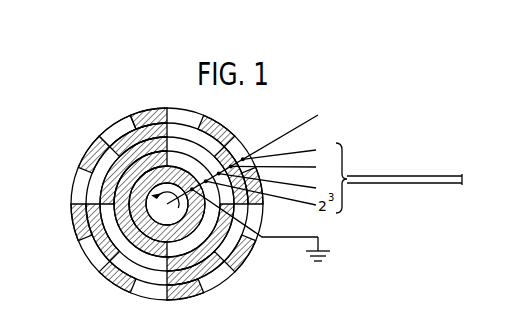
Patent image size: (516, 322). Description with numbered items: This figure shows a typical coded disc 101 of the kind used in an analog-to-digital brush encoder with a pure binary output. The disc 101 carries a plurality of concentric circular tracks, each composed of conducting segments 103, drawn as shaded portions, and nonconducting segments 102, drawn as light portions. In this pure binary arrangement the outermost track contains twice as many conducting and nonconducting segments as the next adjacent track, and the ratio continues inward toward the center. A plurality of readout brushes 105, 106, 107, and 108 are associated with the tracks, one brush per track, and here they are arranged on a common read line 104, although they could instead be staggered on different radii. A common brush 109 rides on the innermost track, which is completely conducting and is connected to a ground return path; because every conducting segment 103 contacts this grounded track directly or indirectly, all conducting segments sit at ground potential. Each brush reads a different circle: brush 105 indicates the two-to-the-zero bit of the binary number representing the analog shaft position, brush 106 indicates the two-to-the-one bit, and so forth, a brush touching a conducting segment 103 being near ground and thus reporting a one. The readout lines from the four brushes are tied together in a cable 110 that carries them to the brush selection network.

The disc 101 is at (66, 142).
The nonconducting segments 102 is at (122, 122).
The conducting segments 103 is at (148, 111).
The common read line 104 is at (268, 143).
The readout brush 105 is at (293, 150).
The readout brush 106 is at (298, 167).
The readout brush 107 is at (329, 244).
The readout brush 108 is at (306, 187).
The common brush 109 is at (266, 238).
The cable 110 is at (433, 175).